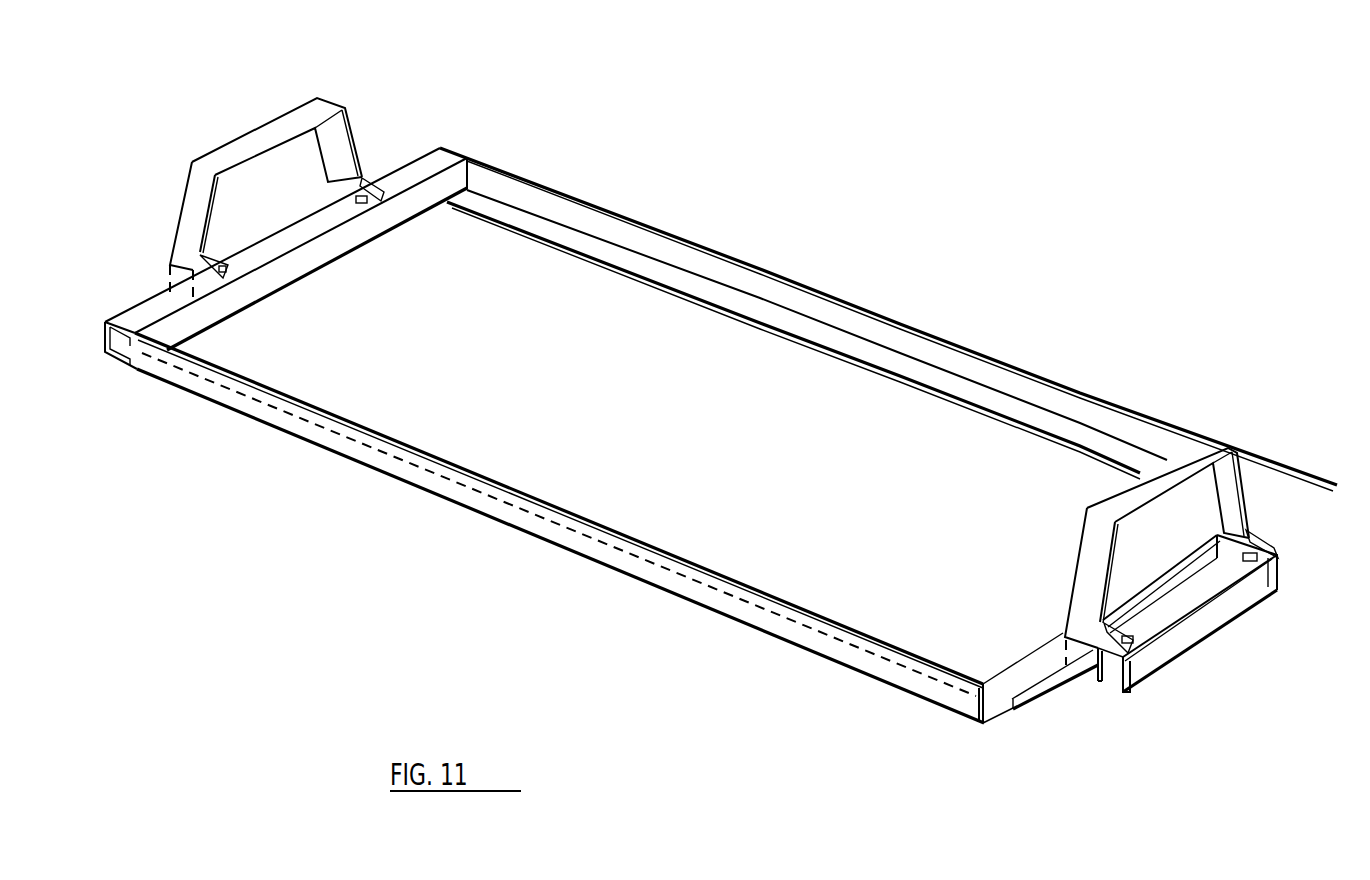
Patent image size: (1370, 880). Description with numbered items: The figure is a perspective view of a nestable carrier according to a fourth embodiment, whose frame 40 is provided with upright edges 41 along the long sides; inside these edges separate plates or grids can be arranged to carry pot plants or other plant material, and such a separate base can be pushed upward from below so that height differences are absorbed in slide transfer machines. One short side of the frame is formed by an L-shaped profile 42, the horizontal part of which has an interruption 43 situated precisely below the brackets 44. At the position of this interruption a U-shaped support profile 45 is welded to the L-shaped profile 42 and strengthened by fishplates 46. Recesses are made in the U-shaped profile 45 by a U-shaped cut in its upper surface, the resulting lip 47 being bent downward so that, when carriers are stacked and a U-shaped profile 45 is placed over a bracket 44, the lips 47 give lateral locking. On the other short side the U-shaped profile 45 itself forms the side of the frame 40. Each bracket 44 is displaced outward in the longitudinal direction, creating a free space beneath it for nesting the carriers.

The frame 40 is at (855, 252).
The upright edges 41 is at (962, 366).
The L-shaped profile 42 is at (1027, 688).
The interruption 43 is at (1163, 592).
The bracket 44 is at (262, 130).
The U-shaped support profile 45 is at (122, 313).
The fishplates 46 is at (380, 203).
The lip 47 is at (240, 268).